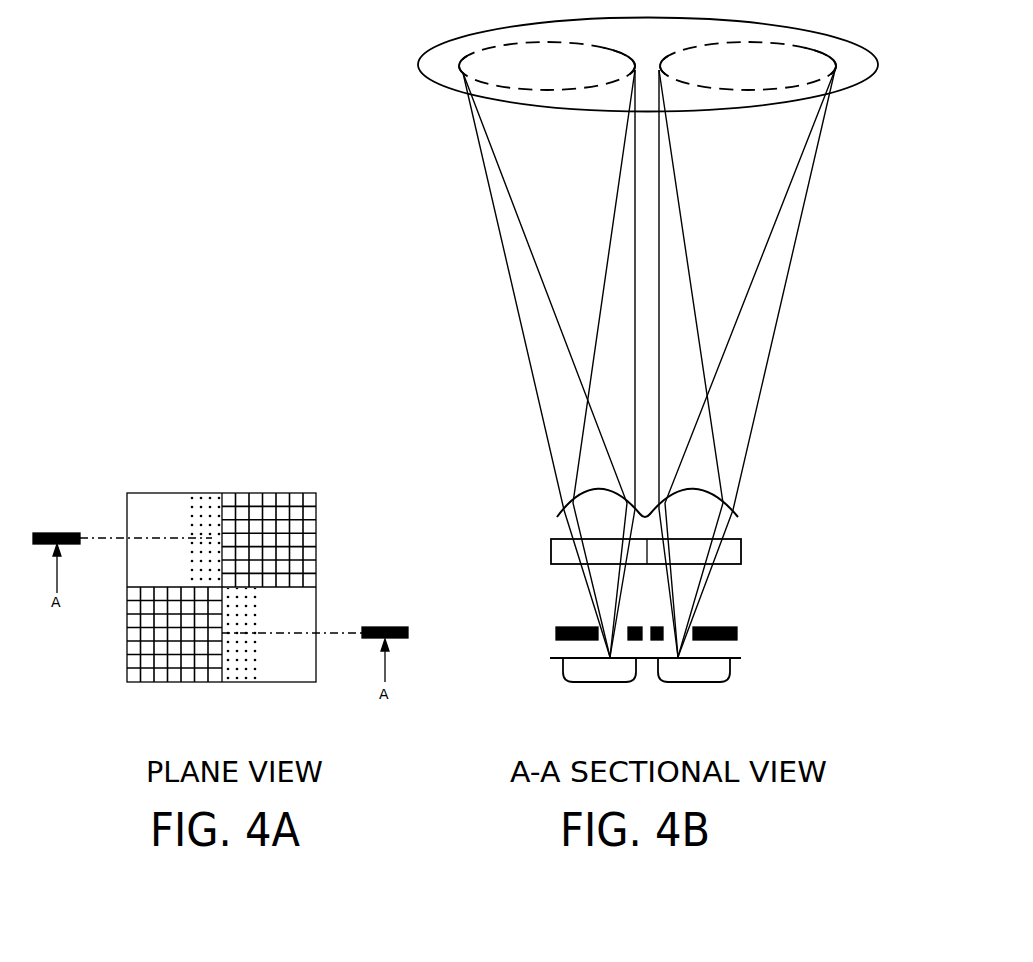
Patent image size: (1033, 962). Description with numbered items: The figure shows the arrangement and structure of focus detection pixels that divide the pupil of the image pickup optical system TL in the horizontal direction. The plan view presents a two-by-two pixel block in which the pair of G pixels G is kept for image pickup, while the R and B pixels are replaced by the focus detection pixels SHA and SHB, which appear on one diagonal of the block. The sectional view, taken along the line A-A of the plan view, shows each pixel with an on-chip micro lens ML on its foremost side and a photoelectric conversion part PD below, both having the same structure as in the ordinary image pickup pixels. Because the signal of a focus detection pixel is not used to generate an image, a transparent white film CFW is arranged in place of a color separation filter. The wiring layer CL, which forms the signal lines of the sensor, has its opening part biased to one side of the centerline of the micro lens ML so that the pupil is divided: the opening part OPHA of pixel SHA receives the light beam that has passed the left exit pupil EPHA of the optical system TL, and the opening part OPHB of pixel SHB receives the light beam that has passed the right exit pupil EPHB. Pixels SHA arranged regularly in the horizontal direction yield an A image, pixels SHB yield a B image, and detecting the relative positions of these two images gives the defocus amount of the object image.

In FIG. 4B, the image pickup optical system TL is at (435, 62).
In FIG. 4B, the left exit pupil EPHA is at (548, 66).
In FIG. 4B, the right exit pupil EPHB is at (752, 64).
In FIG. 4B, the micro lens ML is at (696, 457).
In FIG. 4B, the transparent (white) film CFW is at (836, 457).
In FIG. 4A, the opening part OPHA is at (205, 494).
In FIG. 4B, the opening part OPHA is at (609, 632).
In FIG. 4A, the opening part OPHB is at (237, 683).
In FIG. 4B, the opening part OPHB is at (678, 632).
In FIG. 4B, the wiring layer CL is at (737, 631).
In FIG. 4B, the photoelectric conversion part PD is at (683, 693).
In FIG. 4A, the focus detection pixel SHA is at (174, 540).
In FIG. 4A, the focus detection pixel SHB is at (269, 634).
In FIG. 4A, the G pixel G is at (221, 587).